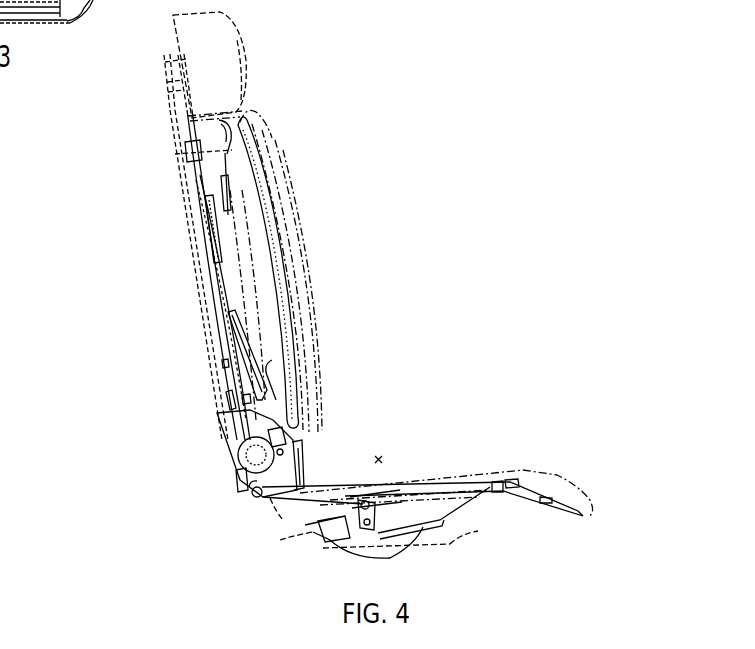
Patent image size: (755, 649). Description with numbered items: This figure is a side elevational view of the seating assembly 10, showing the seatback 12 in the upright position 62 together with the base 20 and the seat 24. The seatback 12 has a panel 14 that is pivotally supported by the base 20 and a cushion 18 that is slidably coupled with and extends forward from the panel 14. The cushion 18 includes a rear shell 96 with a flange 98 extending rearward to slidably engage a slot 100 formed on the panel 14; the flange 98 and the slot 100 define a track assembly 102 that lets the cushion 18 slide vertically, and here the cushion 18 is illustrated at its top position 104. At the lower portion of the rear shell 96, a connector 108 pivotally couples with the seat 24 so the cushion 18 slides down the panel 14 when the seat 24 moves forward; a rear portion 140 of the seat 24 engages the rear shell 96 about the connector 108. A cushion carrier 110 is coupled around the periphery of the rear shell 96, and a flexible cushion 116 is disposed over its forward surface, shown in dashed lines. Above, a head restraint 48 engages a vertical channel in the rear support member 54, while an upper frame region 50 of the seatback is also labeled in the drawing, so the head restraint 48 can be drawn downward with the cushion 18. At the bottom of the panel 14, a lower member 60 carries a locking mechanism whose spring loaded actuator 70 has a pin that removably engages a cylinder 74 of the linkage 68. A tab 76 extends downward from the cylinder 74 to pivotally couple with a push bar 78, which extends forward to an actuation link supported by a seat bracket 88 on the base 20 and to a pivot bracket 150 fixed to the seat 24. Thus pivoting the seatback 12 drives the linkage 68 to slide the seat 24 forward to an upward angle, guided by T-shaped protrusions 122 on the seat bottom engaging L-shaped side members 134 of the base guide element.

The seating assembly 10 is at (388, 46).
The seatback 12 is at (129, 252).
The panel 14 is at (195, 207).
The cushion 18 is at (316, 292).
The base 20 is at (478, 531).
The seat 24 is at (453, 452).
The head restraint 48 is at (223, 49).
The seat back frame upper portion 50 is at (195, 133).
The rear support member 54 is at (162, 78).
The lower member 60 is at (222, 398).
The upright position 62 is at (345, 186).
The linkage 68 is at (233, 489).
The spring loaded actuator 70 is at (252, 417).
The cylinder 74 is at (240, 452).
The tab 76 is at (252, 480).
The push bar 78 is at (277, 497).
The seat bracket 88 is at (302, 530).
The rear shell 96 is at (258, 272).
The flange 98 is at (220, 207).
The slot 100 is at (200, 189).
The track assembly 102 is at (212, 228).
The top position 104 is at (113, 172).
The connector 108 is at (305, 455).
The cushion carrier 110 is at (272, 196).
The flexible cushion 116 is at (297, 213).
The T-shaped protrusions 122 is at (330, 538).
The L-shaped side members 134 is at (390, 552).
The rear portion 140 is at (323, 480).
The pivot bracket 150 is at (387, 507).